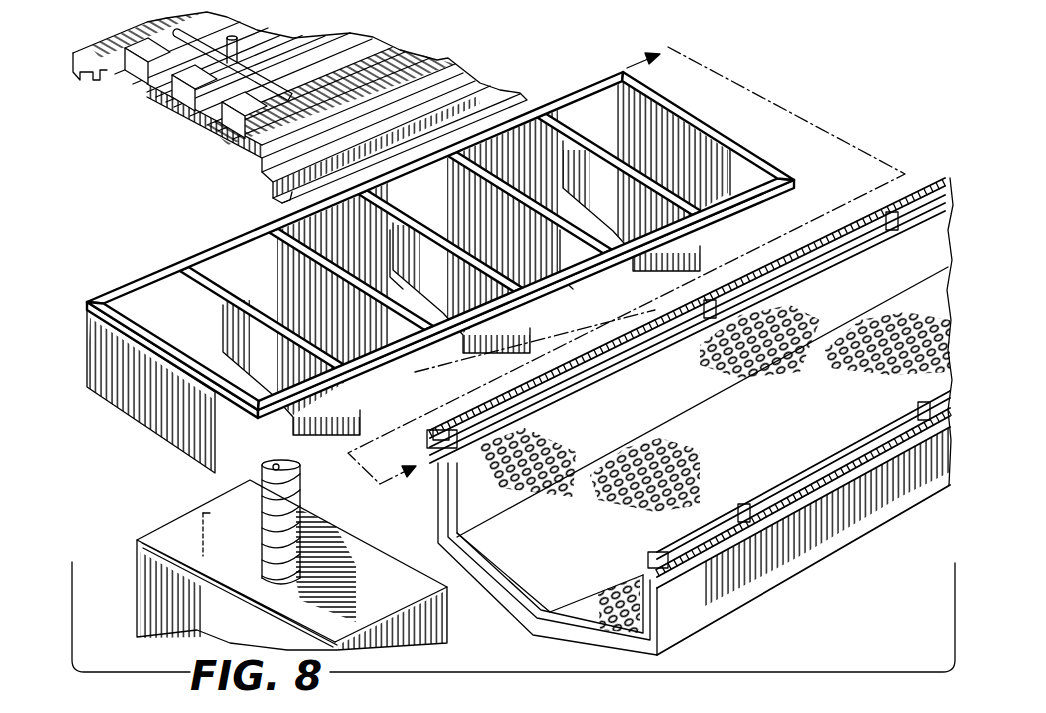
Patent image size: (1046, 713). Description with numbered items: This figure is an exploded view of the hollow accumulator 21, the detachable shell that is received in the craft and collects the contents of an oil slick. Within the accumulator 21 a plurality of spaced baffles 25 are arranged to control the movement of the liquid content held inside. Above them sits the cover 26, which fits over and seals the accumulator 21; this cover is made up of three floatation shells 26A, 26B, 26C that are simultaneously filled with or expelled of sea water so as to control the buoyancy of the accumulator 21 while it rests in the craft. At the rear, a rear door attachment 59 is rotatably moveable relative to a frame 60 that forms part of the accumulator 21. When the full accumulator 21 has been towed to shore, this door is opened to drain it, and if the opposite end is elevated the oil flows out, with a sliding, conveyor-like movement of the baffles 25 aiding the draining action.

The accumulator 21 is at (805, 106).
The baffles 25 is at (240, 340).
The cover 26 is at (300, 107).
The floatation shell 26A is at (141, 74).
The floatation shell 26B is at (187, 103).
The floatation shell 26C is at (235, 127).
The rear door attachment 59 is at (270, 555).
The frame 60 is at (375, 567).